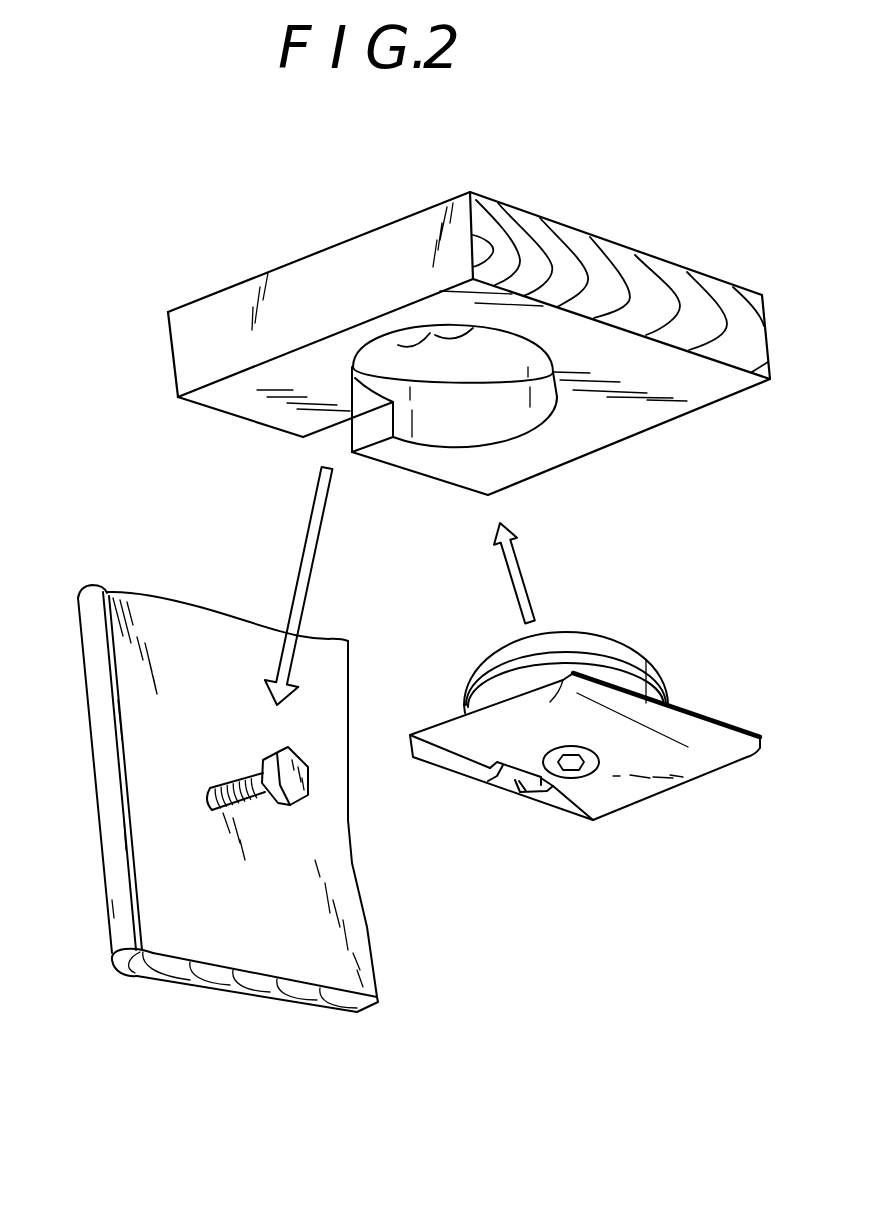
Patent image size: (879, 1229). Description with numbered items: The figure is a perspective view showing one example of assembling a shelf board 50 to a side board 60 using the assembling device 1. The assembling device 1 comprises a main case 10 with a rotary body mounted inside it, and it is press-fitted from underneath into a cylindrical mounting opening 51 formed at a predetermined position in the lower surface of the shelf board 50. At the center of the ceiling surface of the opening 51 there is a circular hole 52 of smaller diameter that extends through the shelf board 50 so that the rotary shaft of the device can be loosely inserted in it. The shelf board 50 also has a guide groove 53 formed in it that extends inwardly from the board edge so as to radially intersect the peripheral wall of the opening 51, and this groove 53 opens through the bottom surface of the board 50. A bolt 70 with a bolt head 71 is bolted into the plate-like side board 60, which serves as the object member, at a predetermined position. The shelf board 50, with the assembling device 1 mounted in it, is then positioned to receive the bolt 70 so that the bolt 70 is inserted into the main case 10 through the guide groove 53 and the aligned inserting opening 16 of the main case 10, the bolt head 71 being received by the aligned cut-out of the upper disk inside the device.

The assembling device 1 is at (647, 811).
The main case 10 is at (687, 773).
The inserting opening 16 is at (510, 780).
The shelf board 50 is at (414, 238).
The cylindrical mounting opening 51 is at (526, 419).
The circular hole 52 is at (396, 342).
The guide groove 53 is at (362, 428).
The side board 60 is at (292, 970).
The bolt 70 is at (217, 780).
The bolt head 71 is at (280, 755).